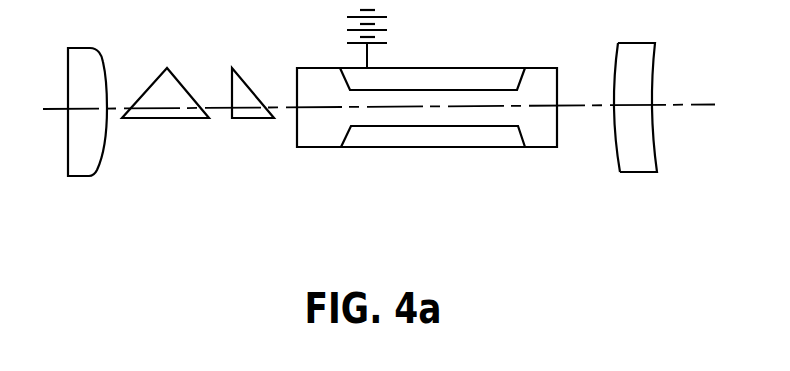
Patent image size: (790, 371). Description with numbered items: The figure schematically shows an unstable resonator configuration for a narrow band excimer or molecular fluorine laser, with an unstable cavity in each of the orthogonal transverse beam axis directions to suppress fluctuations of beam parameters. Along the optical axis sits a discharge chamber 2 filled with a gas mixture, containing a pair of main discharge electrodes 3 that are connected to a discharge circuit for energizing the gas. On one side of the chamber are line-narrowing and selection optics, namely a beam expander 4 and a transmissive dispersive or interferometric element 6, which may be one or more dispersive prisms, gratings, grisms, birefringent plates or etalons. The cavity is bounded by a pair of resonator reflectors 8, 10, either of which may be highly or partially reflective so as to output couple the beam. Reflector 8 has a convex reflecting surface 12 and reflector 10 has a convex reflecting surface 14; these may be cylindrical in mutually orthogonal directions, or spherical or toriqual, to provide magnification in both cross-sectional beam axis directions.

The discharge chamber 2 is at (397, 138).
The main discharge electrodes 3 is at (522, 78).
The beam expander 4 is at (250, 118).
The transmissive dispersive or interferometric element 6 is at (163, 118).
The resonator reflector 8 is at (111, 128).
The resonator reflector 10 is at (607, 117).
The convex reflecting surface 12 is at (103, 68).
The convex reflecting surface 14 is at (615, 62).